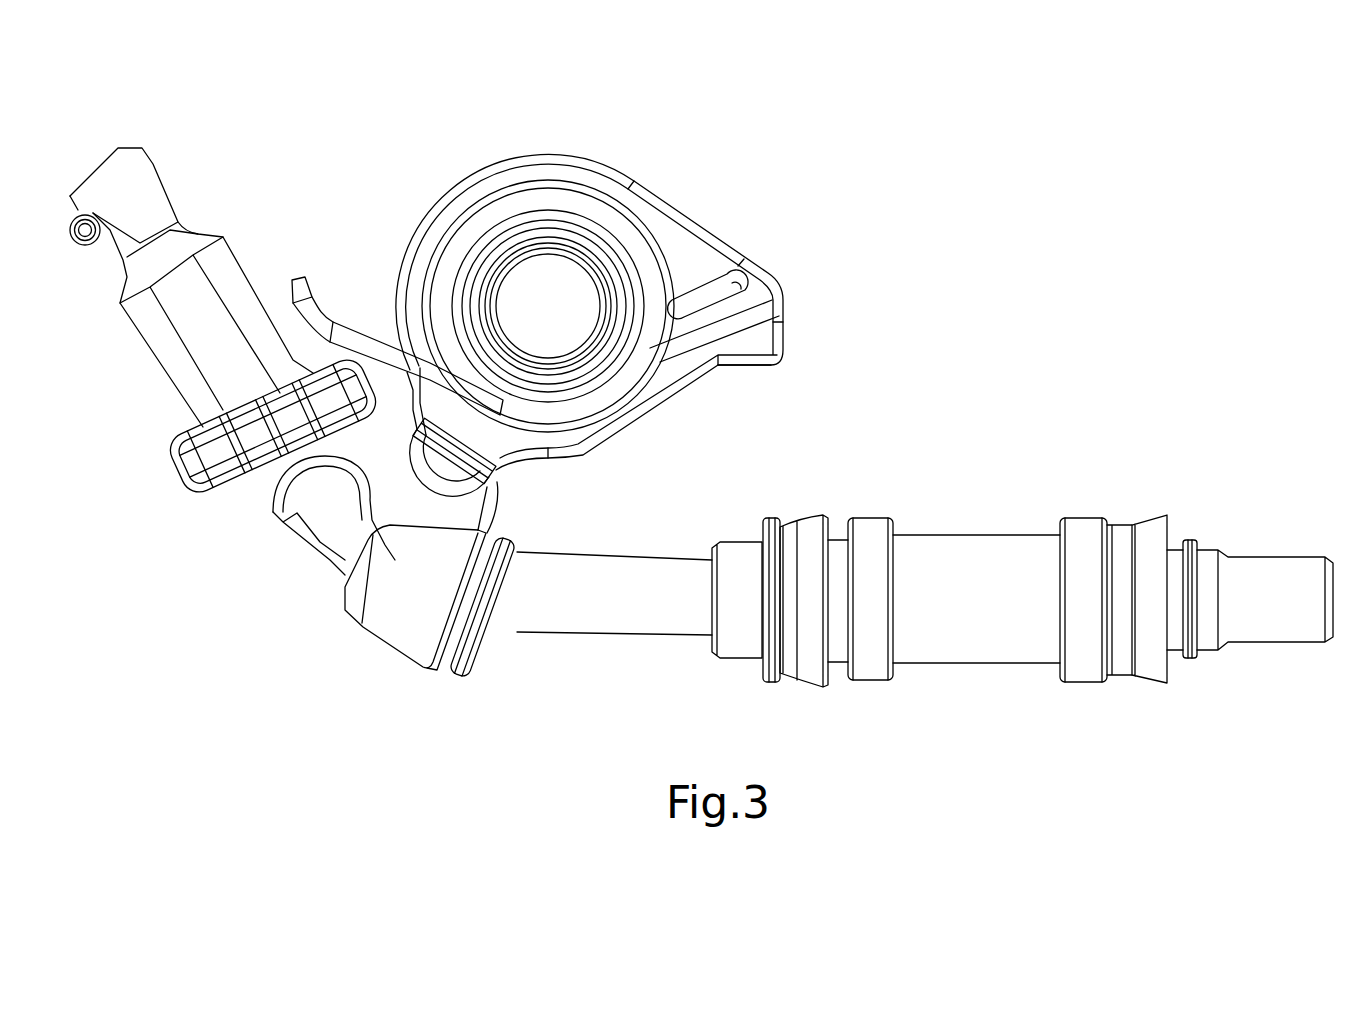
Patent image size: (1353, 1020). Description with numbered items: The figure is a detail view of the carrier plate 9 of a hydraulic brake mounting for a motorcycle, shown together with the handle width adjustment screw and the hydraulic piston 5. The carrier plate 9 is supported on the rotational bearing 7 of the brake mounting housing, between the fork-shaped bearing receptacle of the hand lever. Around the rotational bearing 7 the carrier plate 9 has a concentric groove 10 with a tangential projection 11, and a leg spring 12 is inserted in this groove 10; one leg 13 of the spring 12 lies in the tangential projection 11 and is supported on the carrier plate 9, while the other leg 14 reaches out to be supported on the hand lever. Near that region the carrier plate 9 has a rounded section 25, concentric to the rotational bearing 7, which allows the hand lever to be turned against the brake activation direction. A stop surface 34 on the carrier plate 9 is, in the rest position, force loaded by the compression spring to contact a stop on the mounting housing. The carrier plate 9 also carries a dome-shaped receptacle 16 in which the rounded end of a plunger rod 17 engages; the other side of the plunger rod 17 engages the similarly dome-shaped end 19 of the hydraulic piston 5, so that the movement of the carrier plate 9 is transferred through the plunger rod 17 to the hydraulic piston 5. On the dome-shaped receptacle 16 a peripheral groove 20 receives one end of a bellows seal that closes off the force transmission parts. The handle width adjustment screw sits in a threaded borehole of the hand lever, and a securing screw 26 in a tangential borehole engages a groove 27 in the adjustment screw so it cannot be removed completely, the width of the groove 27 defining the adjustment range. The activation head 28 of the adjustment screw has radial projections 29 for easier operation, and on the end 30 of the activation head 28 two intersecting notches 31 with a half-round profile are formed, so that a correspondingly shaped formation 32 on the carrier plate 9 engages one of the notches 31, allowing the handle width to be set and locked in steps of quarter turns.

The hydraulic piston 5 is at (968, 628).
The rotational bearing 7 is at (558, 306).
The carrier plate 9 is at (403, 490).
The groove 10 is at (560, 180).
The tangential projection 11 is at (722, 277).
The leg spring 12 is at (593, 407).
The leg 13 is at (713, 322).
The other leg 14 is at (353, 342).
The dome-shaped receptacle 16 is at (405, 623).
The plunger rod 17 is at (597, 612).
The dome-shaped end 19 is at (740, 645).
The peripheral groove 20 is at (448, 653).
The rounded section 25 is at (455, 192).
The securing screw 26 is at (84, 215).
The groove 27 is at (167, 198).
The activation head 28 is at (203, 433).
The radial projections 29 is at (215, 473).
The end 30 is at (248, 492).
The intersecting notches 31 is at (292, 492).
The formation 32 is at (295, 460).
The stop surface 34 is at (748, 365).